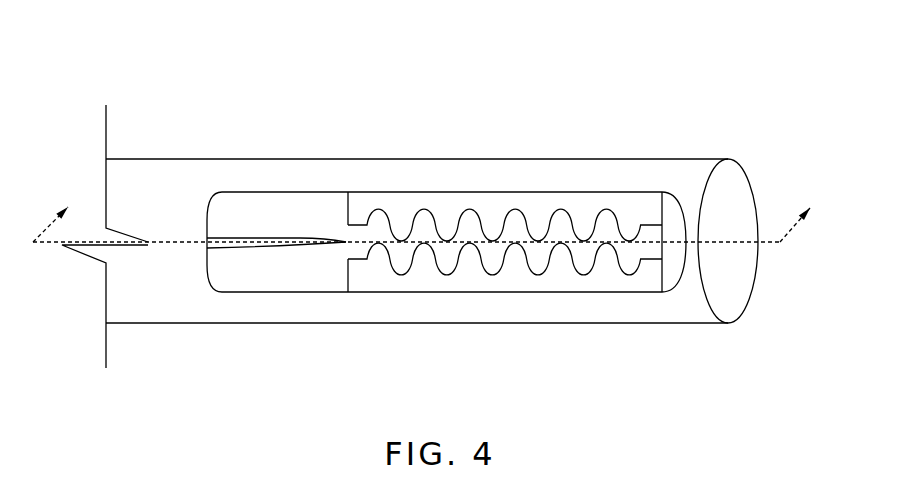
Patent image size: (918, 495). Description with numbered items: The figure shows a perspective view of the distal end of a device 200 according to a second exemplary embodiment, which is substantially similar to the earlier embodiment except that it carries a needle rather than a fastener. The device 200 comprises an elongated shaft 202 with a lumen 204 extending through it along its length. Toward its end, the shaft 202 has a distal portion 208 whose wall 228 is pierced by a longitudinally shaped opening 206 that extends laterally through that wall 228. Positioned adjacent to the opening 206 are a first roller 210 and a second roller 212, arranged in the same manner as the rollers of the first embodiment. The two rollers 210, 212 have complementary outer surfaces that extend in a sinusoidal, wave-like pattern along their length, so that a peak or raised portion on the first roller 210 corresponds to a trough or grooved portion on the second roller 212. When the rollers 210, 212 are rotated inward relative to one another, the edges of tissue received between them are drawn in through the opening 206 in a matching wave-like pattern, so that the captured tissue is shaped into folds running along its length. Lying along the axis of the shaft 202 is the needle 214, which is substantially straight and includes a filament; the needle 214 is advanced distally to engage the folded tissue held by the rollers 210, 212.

The device 200 is at (252, 83).
The shaft 202 is at (178, 190).
The lumen 204 is at (297, 265).
The longitudinally shaped opening 206 is at (305, 192).
The distal portion 208 is at (447, 158).
The first roller 210 is at (468, 273).
The second roller 212 is at (535, 208).
The needle 214 is at (243, 238).
The wall 228 is at (393, 175).